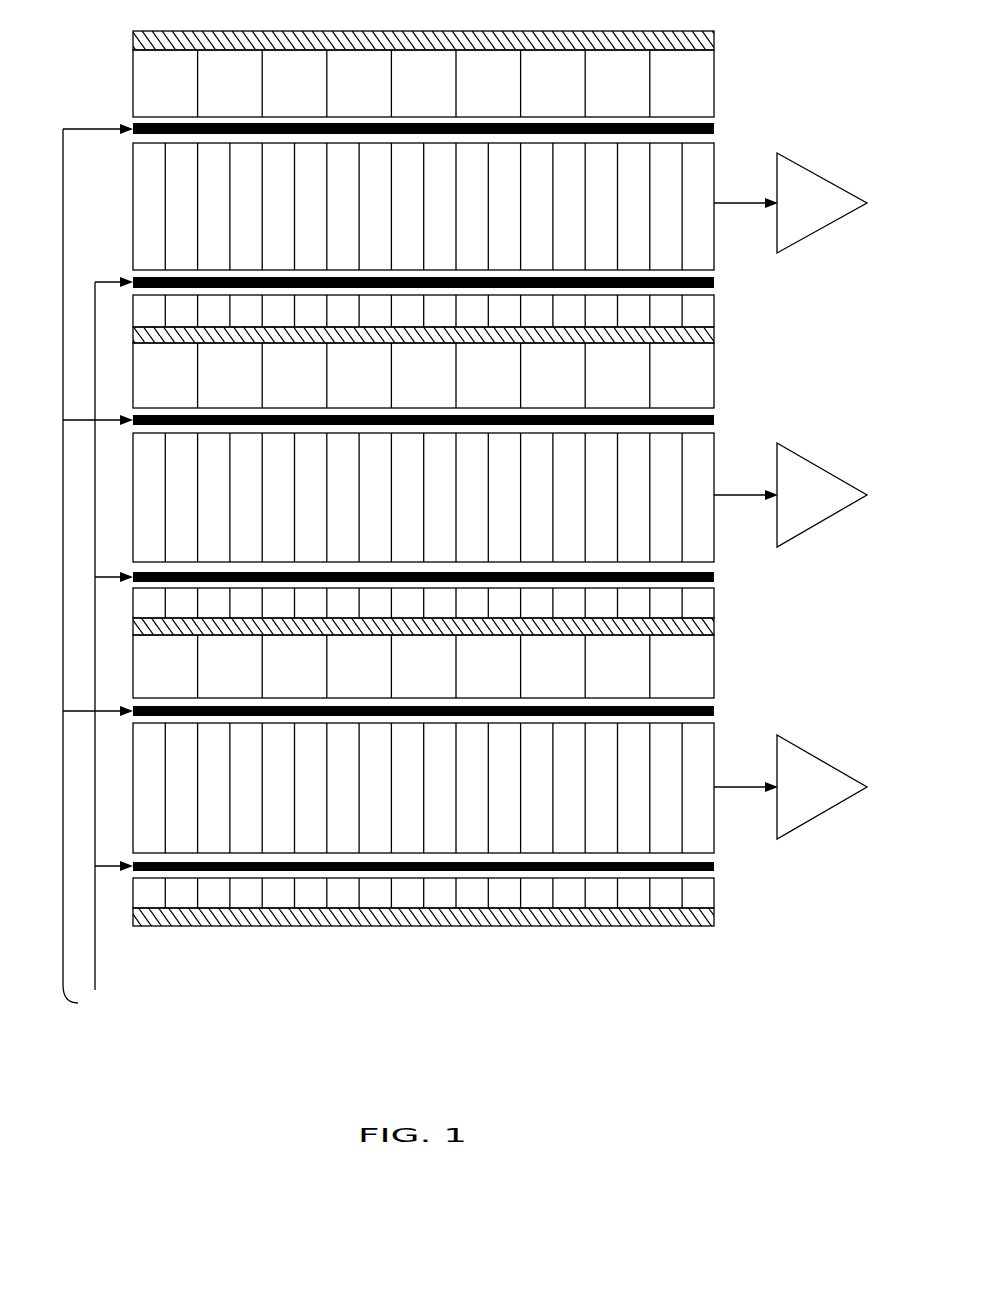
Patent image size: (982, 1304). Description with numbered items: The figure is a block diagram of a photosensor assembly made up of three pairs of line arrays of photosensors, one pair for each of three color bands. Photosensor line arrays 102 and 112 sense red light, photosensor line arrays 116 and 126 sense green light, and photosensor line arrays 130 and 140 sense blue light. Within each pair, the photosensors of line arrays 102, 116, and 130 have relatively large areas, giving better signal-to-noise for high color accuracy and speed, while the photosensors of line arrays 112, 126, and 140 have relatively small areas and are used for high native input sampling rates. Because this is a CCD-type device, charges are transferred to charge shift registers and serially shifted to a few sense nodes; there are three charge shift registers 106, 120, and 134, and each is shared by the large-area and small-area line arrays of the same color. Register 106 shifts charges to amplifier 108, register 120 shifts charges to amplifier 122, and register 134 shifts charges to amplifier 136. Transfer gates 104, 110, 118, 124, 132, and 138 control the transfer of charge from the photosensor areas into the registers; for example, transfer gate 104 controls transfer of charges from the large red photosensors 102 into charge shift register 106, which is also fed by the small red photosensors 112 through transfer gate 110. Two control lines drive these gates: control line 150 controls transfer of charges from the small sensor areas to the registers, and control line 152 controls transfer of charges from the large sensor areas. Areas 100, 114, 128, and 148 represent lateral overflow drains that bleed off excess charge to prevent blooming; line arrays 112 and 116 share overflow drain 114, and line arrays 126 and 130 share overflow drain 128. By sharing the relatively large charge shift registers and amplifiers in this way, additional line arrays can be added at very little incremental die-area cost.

The lateral overflow drain 100 is at (714, 32).
The photosensor line array 102 is at (714, 72).
The transfer gate 104 is at (714, 121).
The charge shift register 106 is at (715, 178).
The amplifier 108 is at (790, 214).
The transfer gate 110 is at (714, 276).
The photosensor line array 112 is at (714, 303).
The lateral overflow drain 114 is at (714, 327).
The photosensor line array 116 is at (714, 368).
The transfer gate 118 is at (714, 413).
The charge shift register 120 is at (715, 469).
The amplifier 122 is at (790, 506).
The transfer gate 124 is at (714, 566).
The photosensor line array 126 is at (714, 594).
The lateral overflow drain 128 is at (714, 620).
The photosensor line array 130 is at (714, 658).
The transfer gate 132 is at (714, 704).
The charge shift register 134 is at (715, 761).
The amplifier 136 is at (790, 798).
The transfer gate 138 is at (714, 858).
The photosensor line array 140 is at (714, 886).
The lateral overflow drain 148 is at (714, 910).
The control line 150 is at (97, 976).
The control line 152 is at (98, 570).